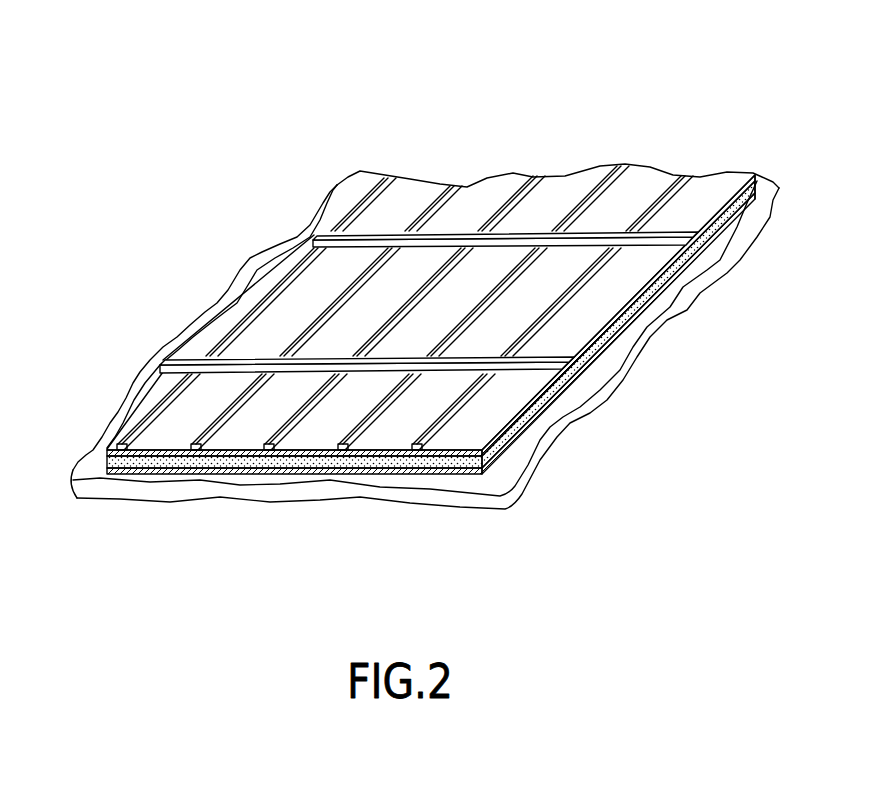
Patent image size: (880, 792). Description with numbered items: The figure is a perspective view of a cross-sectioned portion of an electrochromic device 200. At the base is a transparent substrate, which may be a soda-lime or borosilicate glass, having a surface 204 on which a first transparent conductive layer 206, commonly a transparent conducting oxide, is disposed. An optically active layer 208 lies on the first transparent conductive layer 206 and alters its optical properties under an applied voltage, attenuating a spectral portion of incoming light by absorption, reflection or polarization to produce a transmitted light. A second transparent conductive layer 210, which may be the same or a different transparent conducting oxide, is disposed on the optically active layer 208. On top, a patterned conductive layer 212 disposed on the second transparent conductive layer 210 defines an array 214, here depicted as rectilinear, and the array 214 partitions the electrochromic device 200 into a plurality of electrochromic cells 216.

The electrochromic device 200 is at (240, 72).
The surface 204 is at (94, 468).
The first transparent conductive layer 206 is at (167, 478).
The optically active layer 208 is at (213, 460).
The second transparent conductive layer 210 is at (291, 456).
The patterned conductive layer 212 is at (415, 453).
The array 214 is at (470, 233).
The electrochromic cells 216 is at (385, 215).